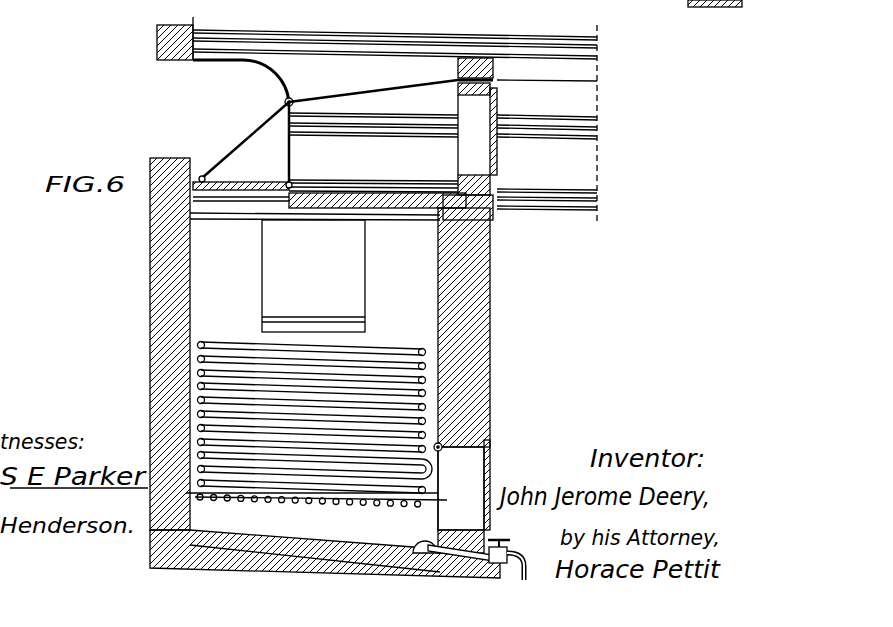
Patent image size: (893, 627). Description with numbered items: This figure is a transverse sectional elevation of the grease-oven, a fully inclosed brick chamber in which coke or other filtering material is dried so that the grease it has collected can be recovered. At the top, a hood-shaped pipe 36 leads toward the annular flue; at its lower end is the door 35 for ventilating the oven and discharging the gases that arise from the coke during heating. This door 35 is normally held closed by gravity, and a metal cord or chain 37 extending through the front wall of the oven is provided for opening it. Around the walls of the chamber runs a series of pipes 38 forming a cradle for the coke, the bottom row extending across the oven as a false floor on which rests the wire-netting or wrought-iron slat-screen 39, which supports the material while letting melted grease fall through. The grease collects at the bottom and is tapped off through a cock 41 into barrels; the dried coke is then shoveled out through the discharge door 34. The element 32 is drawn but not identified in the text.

The inner box / receptacle 32 is at (337, 276).
The discharge door 34 is at (462, 496).
The ventilation door 35 is at (245, 145).
The hood-shaped pipe 36 is at (243, 83).
The metal cord or chain 37 is at (373, 87).
The series of pipes 38 is at (315, 407).
The wire-netting or wrought-iron slat-screen 39 is at (281, 503).
The cock 41 is at (480, 560).